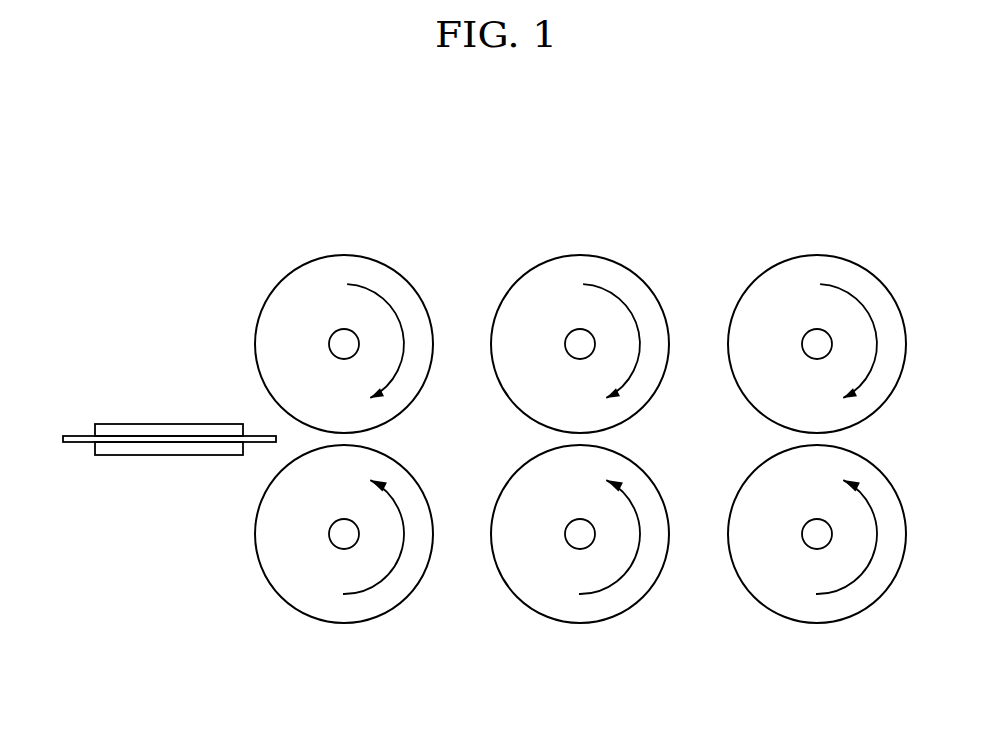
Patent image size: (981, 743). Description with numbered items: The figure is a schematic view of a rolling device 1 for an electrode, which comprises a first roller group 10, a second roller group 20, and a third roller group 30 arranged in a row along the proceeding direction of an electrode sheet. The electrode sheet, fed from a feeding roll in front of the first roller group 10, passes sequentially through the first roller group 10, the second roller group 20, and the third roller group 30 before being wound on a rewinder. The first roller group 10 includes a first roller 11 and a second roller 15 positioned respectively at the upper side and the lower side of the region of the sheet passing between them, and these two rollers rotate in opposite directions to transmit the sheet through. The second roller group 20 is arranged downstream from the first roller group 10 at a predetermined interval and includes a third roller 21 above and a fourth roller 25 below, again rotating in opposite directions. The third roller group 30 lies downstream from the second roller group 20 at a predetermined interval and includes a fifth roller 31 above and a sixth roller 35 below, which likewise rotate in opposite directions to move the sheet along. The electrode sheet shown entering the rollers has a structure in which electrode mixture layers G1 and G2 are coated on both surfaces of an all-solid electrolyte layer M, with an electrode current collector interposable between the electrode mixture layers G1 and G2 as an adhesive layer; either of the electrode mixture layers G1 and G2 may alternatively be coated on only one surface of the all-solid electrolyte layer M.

The rolling device 1 is at (173, 195).
The first roller group 10 is at (373, 248).
The first roller 11 is at (290, 282).
The second roller 15 is at (272, 568).
The second roller group 20 is at (609, 248).
The third roller 21 is at (526, 282).
The fourth roller 25 is at (508, 568).
The third roller group 30 is at (846, 248).
The fifth roller 31 is at (763, 282).
The sixth roller 35 is at (745, 568).
The all-solid electrolyte layer M is at (65, 437).
The electrode mixture layer G1 is at (148, 425).
The electrode mixture layer G2 is at (148, 455).